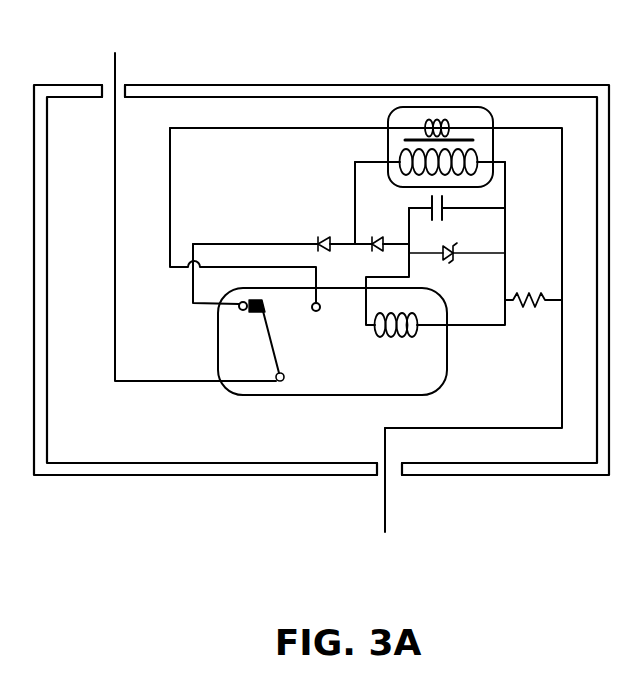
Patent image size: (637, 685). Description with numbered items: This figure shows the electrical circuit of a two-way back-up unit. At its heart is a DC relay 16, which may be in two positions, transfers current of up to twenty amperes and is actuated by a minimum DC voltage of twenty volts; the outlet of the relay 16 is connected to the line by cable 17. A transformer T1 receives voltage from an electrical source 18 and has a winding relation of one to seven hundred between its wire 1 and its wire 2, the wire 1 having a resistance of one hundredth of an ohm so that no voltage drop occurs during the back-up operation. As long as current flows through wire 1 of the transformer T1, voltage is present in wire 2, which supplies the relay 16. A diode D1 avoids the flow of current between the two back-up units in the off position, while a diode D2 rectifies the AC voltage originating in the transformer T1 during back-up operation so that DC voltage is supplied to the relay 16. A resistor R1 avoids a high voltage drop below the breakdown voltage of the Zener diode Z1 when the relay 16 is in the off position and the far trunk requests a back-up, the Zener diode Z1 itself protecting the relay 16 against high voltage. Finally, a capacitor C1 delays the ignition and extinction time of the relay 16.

The wire 1 of transformer 1 is at (420, 126).
The wire 2 of transformer 2 is at (400, 160).
The DC relay 16 is at (360, 398).
The cable 17 is at (102, 68).
The electrical source 18 is at (376, 509).
The transformer T1 is at (492, 110).
The diode D1 is at (322, 238).
The diode D2 is at (380, 238).
The capacitor C1 is at (459, 209).
The Zener diode Z1 is at (456, 262).
The resistor R1 is at (545, 297).